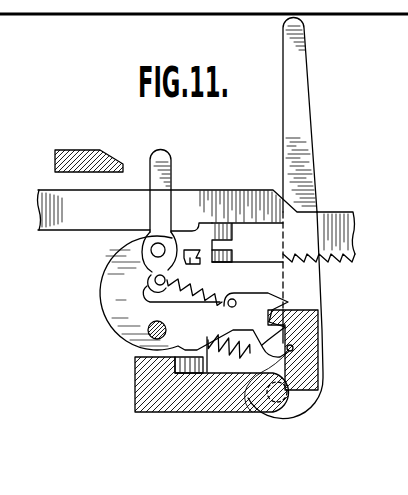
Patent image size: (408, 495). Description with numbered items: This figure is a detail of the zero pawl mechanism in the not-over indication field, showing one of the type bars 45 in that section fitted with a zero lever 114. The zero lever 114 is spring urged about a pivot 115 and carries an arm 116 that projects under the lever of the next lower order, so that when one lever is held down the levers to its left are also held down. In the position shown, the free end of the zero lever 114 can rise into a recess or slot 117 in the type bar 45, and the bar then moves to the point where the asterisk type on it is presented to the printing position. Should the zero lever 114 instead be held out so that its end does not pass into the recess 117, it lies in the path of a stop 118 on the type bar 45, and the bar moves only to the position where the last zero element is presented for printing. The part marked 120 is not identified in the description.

The type bar 45 is at (337, 218).
The zero lever 114 is at (227, 225).
The pivot 115 is at (151, 247).
The arm 116 is at (191, 264).
The recess or slot 117 is at (210, 223).
The stop 118 is at (222, 253).
The lever 120 is at (187, 250).